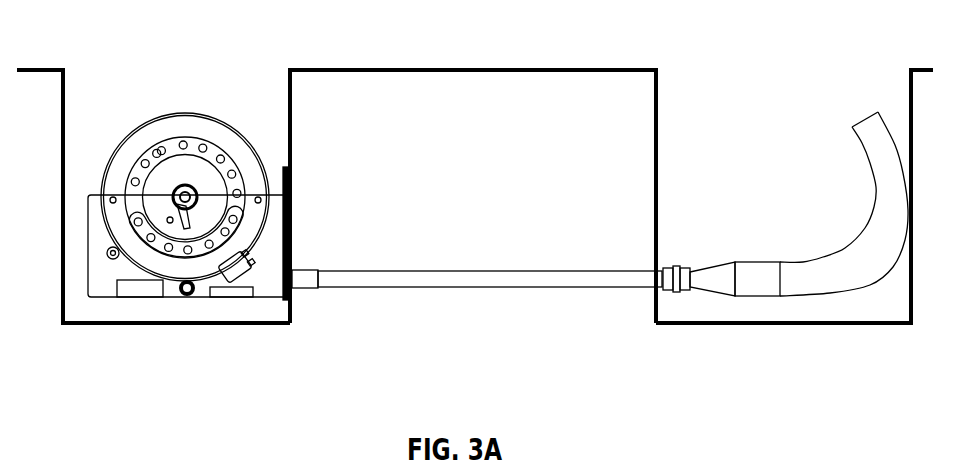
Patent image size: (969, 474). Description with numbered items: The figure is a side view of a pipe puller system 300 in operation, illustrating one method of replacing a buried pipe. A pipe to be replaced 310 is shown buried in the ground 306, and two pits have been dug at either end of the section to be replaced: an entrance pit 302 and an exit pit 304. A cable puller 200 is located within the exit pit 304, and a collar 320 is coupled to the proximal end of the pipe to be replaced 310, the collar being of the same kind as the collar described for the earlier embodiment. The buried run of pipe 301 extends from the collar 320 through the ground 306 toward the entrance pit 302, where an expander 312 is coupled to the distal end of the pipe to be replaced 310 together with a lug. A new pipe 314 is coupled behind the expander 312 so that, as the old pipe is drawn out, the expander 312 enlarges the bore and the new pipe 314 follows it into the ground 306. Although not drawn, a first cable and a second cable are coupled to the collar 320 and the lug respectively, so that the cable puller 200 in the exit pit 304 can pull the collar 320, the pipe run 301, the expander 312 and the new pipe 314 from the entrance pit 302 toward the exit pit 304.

The cable puller 200 is at (150, 135).
The pipe puller system 300 is at (575, 345).
The tube 301 is at (467, 276).
The entrance pit 302 is at (793, 97).
The exit pit 304 is at (211, 57).
The ground 306 is at (520, 80).
The pipe to be replaced 310 is at (674, 290).
The expander 312 is at (753, 275).
The new pipe 314 is at (880, 191).
The collar 320 is at (302, 286).